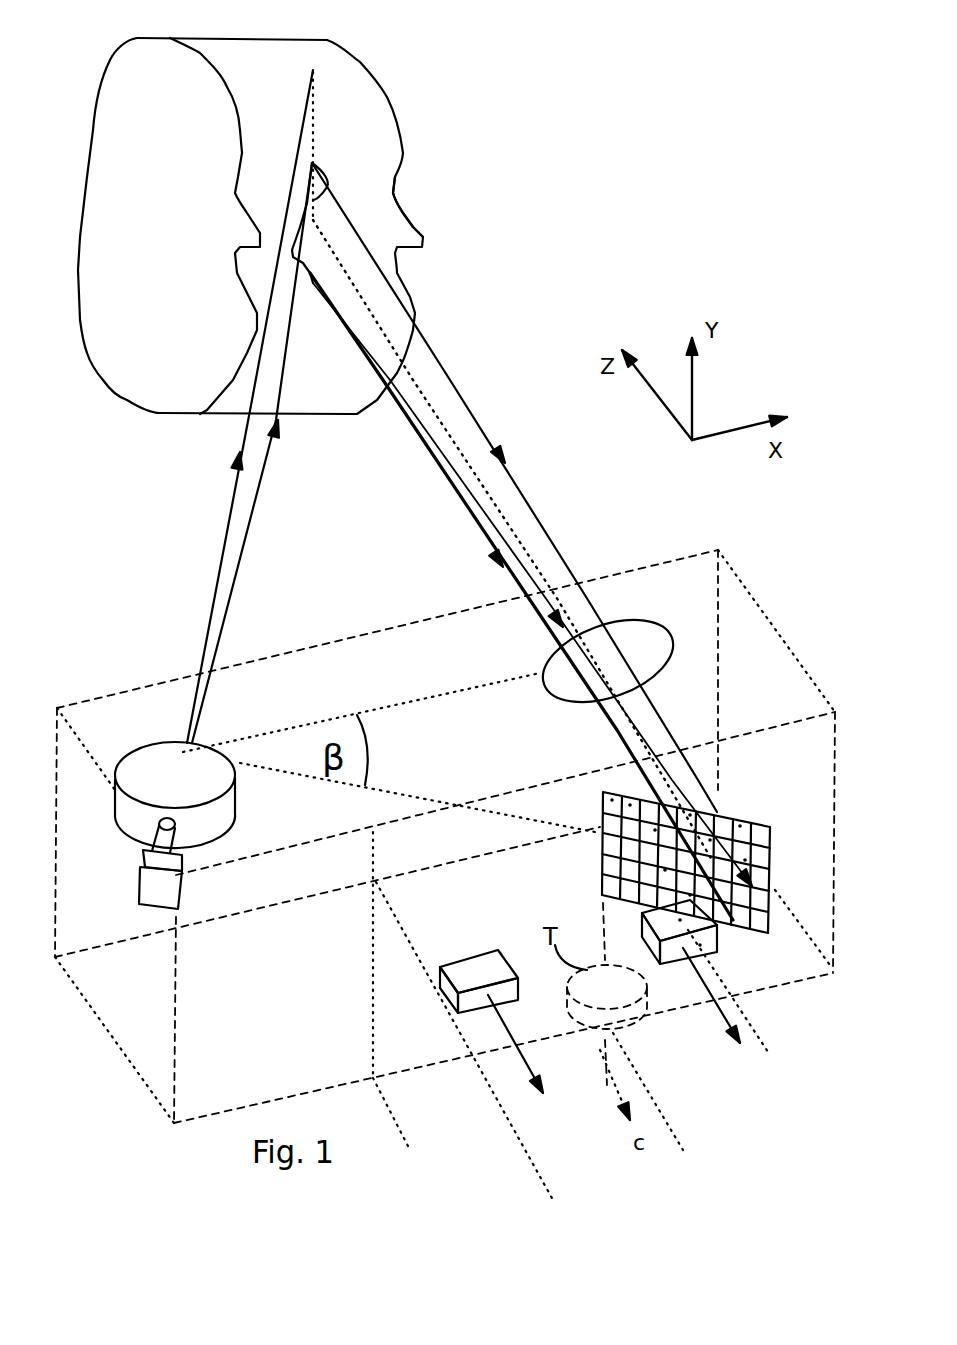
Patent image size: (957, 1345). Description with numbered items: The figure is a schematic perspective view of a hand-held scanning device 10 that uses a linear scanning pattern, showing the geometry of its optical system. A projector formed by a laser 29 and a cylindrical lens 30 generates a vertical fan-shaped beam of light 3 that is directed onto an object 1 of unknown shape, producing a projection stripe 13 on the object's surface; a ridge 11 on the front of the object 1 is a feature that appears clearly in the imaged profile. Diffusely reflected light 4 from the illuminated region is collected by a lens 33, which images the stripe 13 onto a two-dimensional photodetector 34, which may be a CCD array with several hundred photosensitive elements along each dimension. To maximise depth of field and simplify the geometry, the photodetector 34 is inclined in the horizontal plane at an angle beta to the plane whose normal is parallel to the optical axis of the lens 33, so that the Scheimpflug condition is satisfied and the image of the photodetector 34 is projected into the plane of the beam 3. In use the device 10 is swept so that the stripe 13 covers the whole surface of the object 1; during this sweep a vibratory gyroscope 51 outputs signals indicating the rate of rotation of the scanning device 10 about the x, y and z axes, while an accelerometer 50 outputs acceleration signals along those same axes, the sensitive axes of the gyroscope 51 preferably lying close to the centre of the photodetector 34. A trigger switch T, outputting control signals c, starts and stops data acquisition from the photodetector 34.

The object 1 is at (352, 414).
The fan-shaped beam of light 3 is at (242, 560).
The diffusely reflected light 4 is at (521, 479).
The scanning device 10 is at (133, 1143).
The ridge 11 is at (423, 237).
The projection of the beam (projection stripe) 13 is at (330, 182).
The laser 29 is at (183, 890).
The cylindrical lens 30 is at (225, 792).
The lens 33 is at (625, 620).
The two-dimensional photodetector 34 is at (743, 822).
The accelerometer 50 is at (468, 957).
The vibratory gyroscope 51 is at (677, 968).